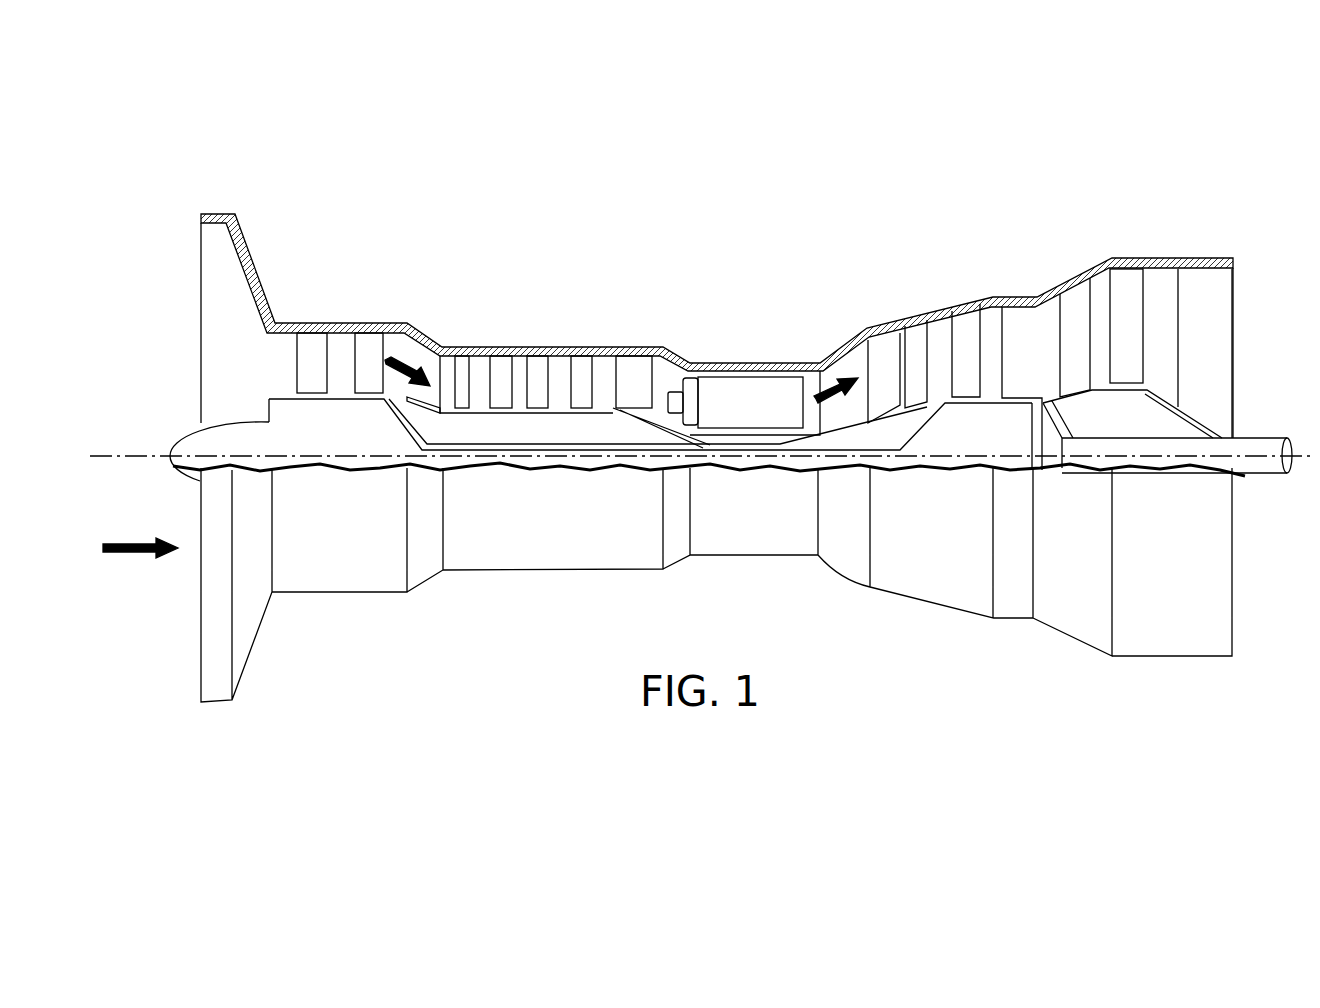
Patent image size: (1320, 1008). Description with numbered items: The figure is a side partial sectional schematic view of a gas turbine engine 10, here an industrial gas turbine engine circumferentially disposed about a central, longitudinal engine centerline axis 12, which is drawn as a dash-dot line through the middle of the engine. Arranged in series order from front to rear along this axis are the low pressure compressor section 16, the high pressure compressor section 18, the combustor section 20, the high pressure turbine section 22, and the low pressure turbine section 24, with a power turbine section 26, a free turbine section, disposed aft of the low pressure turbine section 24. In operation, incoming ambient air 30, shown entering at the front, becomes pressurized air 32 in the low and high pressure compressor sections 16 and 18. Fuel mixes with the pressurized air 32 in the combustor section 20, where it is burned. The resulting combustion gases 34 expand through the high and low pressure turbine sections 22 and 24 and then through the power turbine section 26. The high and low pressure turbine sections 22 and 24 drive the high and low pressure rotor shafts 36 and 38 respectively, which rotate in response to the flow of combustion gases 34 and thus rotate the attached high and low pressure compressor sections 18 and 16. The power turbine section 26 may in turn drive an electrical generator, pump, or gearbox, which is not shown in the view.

The gas turbine engine 10 is at (822, 206).
The engine centerline axis 12 is at (138, 455).
The low pressure compressor section 16 is at (333, 306).
The high pressure compressor section 18 is at (572, 316).
The combustor section 20 is at (727, 388).
The high pressure turbine section 22 is at (920, 292).
The low pressure turbine section 24 is at (1028, 278).
The power turbine section 26 is at (1178, 251).
The incoming ambient air 30 is at (134, 528).
The pressurized air 32 is at (410, 366).
The combustion gases 34 is at (832, 386).
The high pressure rotor shaft 36 is at (748, 337).
The low pressure rotor shaft 38 is at (420, 433).